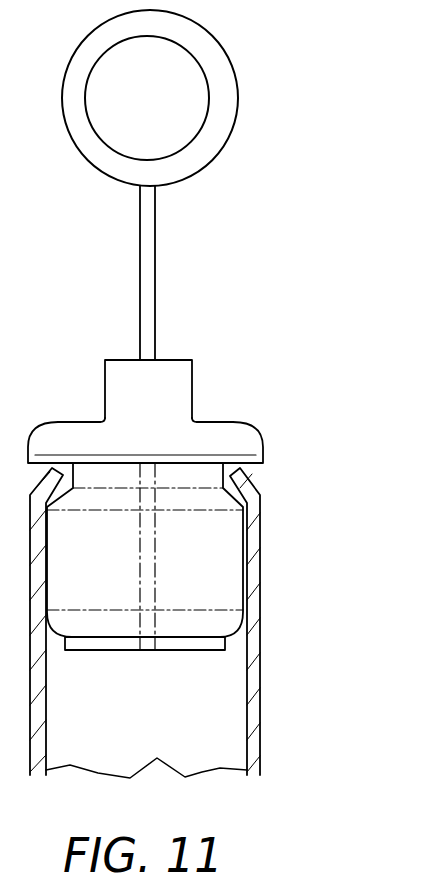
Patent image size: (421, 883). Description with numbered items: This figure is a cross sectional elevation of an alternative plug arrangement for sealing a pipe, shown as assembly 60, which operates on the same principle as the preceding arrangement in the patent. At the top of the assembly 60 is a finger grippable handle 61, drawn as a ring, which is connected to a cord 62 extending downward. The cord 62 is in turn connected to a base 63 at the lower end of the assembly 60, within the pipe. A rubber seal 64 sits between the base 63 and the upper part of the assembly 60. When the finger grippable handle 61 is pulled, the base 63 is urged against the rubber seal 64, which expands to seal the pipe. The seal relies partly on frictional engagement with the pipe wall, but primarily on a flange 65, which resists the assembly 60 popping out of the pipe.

The assembly 60 is at (255, 363).
The finger grippable handle 61 is at (223, 92).
The cord 62 is at (147, 259).
The base 63 is at (102, 647).
The rubber seal 64 is at (218, 582).
The flange 65 is at (252, 483).